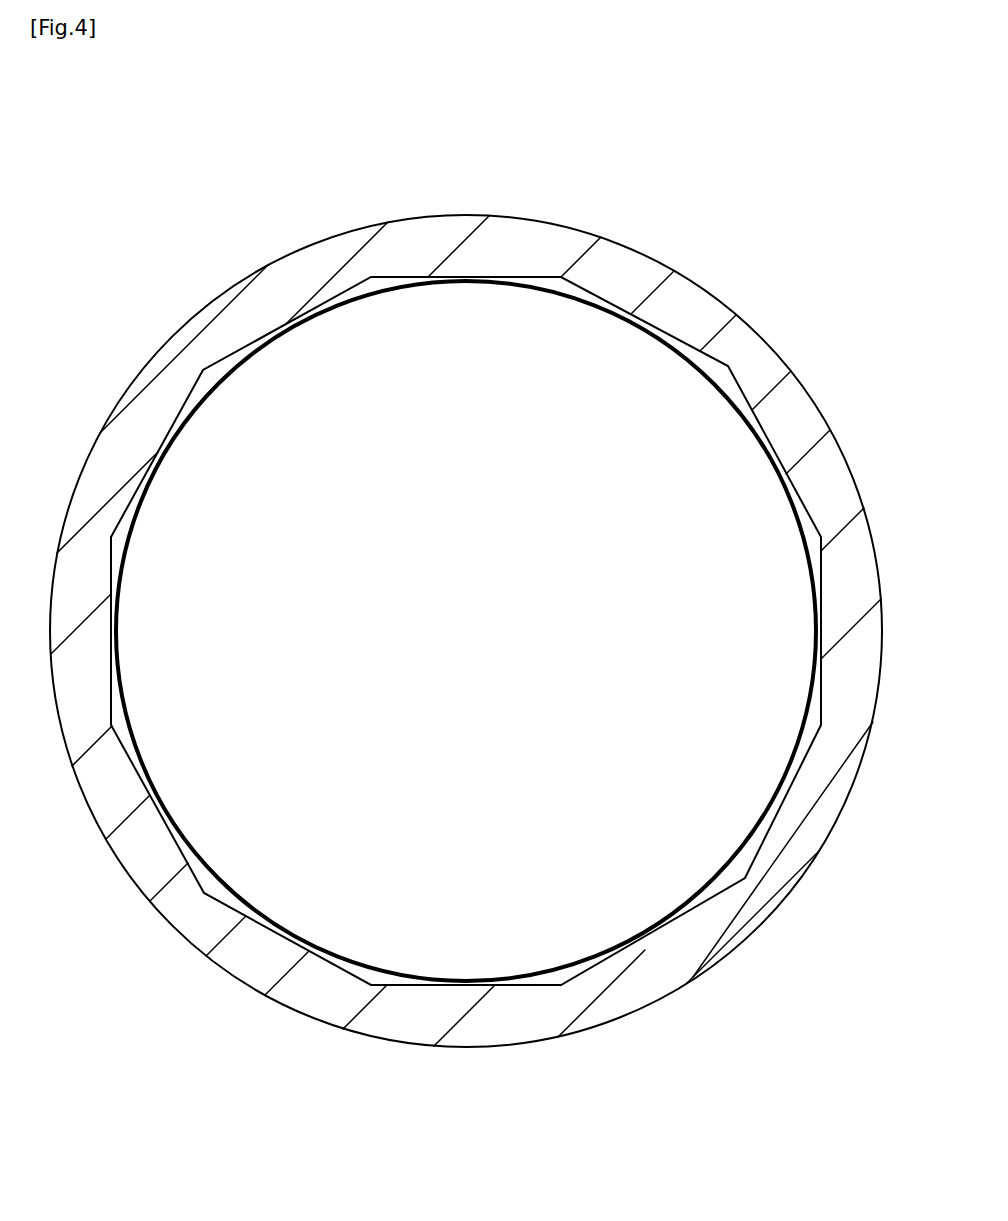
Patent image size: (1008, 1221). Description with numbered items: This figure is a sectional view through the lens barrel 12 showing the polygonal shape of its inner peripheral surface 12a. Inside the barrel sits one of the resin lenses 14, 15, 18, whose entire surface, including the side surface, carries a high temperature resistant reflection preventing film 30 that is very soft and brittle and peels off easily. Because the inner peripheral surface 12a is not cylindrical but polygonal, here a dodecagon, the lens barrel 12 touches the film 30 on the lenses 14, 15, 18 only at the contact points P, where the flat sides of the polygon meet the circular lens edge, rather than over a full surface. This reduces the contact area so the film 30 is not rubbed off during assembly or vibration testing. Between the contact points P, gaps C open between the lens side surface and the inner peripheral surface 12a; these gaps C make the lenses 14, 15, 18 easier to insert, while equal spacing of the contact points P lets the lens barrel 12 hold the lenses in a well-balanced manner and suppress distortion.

The lens barrel 12 is at (253, 313).
The inner peripheral surface 12a is at (413, 342).
The high temperature resistant reflection preventing film 30 is at (215, 387).
The contact point P is at (463, 280).
The gap C is at (725, 878).
The resin lens 14 is at (667, 473).
The resin lens 15 is at (667, 473).
The resin lens 18 is at (667, 473).